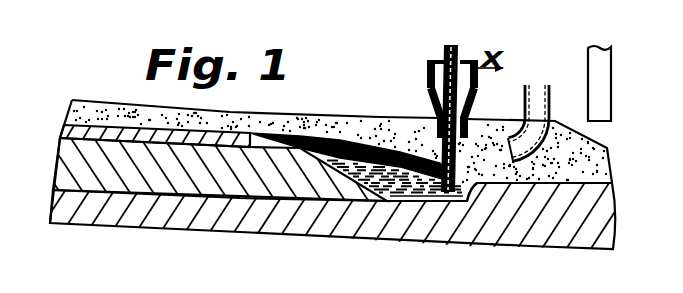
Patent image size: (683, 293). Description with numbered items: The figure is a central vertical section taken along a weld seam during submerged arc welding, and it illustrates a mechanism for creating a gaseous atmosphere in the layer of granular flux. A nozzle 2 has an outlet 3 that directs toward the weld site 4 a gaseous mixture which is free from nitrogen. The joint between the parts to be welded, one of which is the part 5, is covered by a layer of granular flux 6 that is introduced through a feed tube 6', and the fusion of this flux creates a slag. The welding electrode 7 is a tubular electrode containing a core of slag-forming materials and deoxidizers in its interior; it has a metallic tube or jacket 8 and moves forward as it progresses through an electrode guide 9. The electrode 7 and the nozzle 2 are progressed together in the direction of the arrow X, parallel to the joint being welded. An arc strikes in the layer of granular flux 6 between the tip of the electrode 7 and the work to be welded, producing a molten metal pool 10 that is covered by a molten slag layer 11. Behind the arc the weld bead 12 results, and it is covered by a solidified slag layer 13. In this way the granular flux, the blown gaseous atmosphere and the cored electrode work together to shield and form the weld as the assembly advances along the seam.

The nozzle 2 is at (548, 98).
The outlet 3 is at (505, 150).
The weld site 4 is at (460, 184).
The part to be welded 5 is at (442, 232).
The granular flux 6 is at (339, 161).
The feed tube 6' is at (610, 66).
The welding electrode 7 is at (462, 121).
The metallic tube or jacket 8 is at (442, 134).
The electrode guide 9 is at (427, 72).
The weld pool 10 is at (388, 202).
The molten slag layer 11 is at (265, 138).
The weld bead 12 is at (83, 161).
The solidified slag layer 13 is at (110, 137).